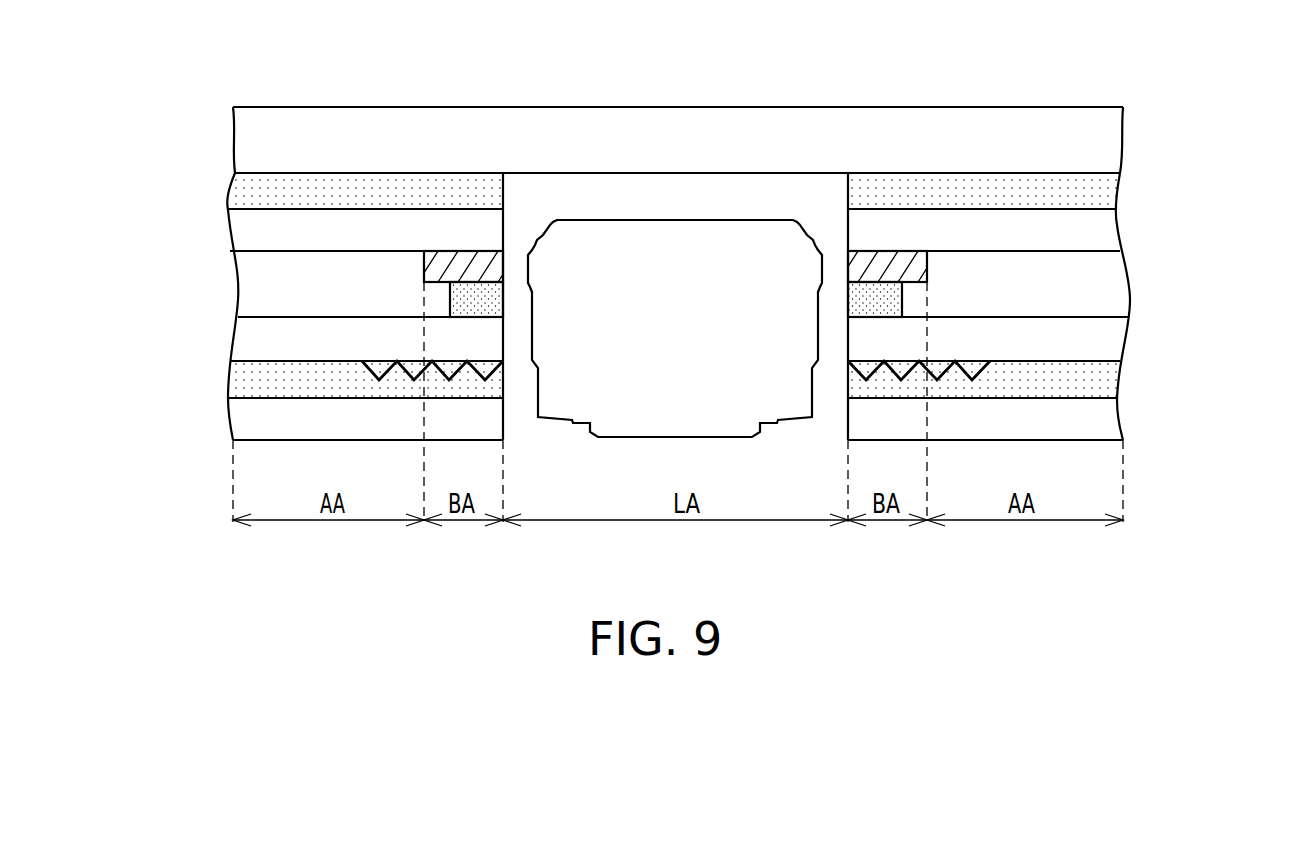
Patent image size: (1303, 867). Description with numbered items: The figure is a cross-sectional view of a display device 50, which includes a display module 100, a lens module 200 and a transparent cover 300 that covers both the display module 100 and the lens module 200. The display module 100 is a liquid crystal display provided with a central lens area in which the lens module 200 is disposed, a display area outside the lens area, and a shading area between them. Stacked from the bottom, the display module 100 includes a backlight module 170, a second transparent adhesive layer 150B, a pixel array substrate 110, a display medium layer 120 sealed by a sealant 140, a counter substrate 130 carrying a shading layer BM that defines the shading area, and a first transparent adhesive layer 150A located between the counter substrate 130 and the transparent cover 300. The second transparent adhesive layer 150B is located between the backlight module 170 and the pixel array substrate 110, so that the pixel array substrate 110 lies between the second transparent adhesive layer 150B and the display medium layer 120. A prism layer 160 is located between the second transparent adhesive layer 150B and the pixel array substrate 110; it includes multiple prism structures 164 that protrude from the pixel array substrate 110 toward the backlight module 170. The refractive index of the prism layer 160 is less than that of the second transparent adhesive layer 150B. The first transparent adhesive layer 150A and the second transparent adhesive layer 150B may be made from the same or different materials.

The transparent cover 300 is at (1112, 124).
The display module 100 is at (198, 173).
The first transparent adhesive layer 150A is at (1110, 190).
The counter substrate 130 is at (1106, 233).
The shading layer BM is at (913, 262).
The display medium layer 120 is at (1103, 292).
The sealant 140 is at (902, 297).
The pixel array substrate 110 is at (1098, 345).
The second transparent adhesive layer 150B is at (1093, 376).
The prism structures 164 is at (670, 210).
The prism layer 160 is at (417, 363).
The backlight module 170 is at (1093, 418).
The lens module 200 is at (737, 218).
The display device 50 is at (1213, 559).